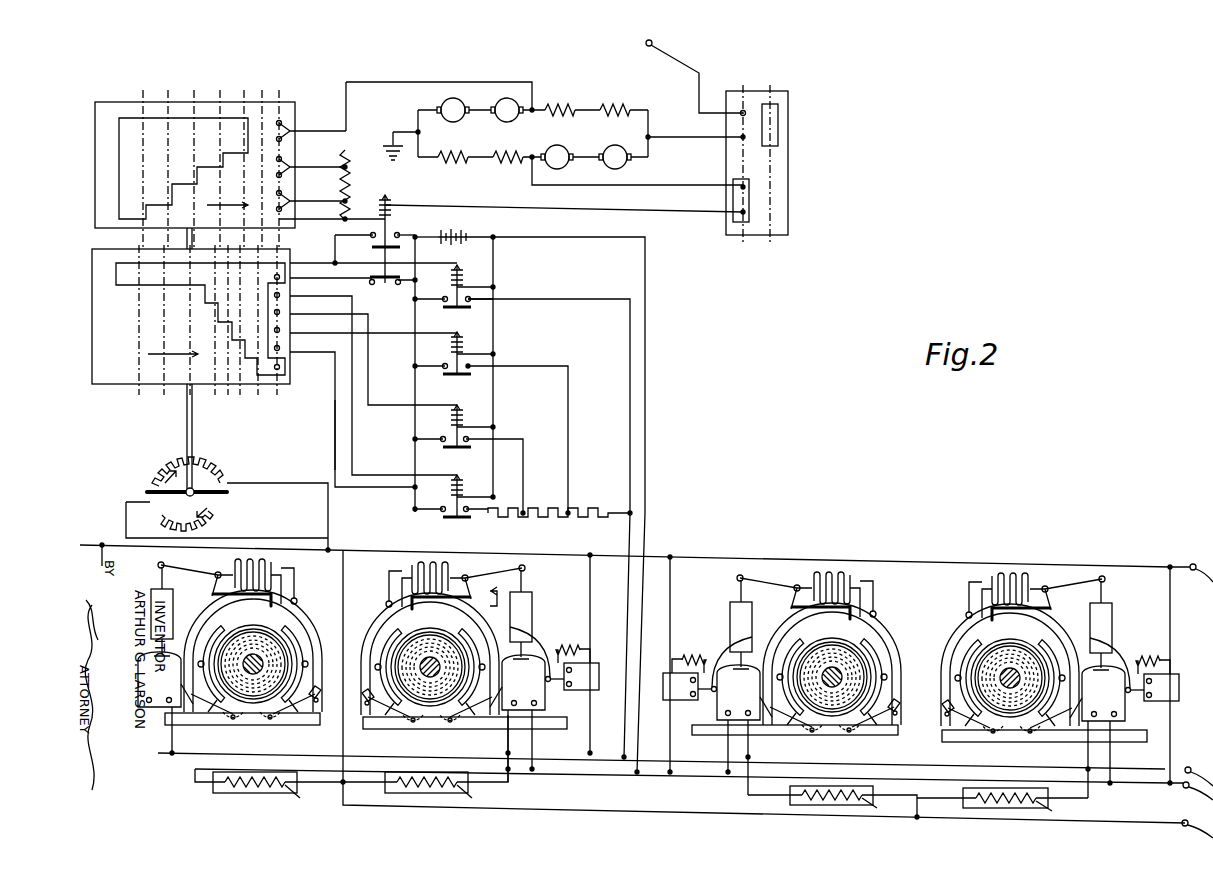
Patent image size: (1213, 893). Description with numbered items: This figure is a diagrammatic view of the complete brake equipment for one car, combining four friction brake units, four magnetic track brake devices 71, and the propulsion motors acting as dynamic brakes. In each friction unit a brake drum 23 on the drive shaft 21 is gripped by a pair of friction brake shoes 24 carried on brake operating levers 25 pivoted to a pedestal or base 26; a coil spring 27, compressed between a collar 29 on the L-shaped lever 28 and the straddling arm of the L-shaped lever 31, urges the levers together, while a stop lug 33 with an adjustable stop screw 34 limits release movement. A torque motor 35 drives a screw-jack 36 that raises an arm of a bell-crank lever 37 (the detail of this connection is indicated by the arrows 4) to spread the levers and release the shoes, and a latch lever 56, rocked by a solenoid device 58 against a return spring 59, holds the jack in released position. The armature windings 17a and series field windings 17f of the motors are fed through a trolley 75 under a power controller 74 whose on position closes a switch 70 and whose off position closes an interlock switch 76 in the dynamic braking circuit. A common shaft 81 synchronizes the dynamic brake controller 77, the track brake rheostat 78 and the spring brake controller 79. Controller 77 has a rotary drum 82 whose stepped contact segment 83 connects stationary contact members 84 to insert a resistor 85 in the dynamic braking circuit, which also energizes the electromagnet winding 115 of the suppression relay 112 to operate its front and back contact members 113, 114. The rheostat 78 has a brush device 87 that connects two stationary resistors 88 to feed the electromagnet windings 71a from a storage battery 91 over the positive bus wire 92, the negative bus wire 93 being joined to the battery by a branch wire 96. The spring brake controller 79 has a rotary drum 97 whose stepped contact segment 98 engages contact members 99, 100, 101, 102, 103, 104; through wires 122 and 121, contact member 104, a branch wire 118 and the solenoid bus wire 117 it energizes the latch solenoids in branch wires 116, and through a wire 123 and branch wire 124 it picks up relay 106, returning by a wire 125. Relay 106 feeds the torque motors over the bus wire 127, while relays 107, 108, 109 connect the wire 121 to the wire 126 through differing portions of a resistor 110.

The direction arrows 4 is at (498, 604).
The armature winding 17a is at (443, 101).
The series field winding 17f is at (560, 106).
The drive shaft 21 is at (264, 672).
The brake drum 23 is at (262, 724).
The friction brake shoes 24 is at (214, 648).
The brake operating levers 25 is at (190, 631).
The supporting pedestal or base 26 is at (208, 726).
The coil spring 27 is at (262, 563).
The L-shaped lever 28 is at (296, 587).
The collar 29 is at (236, 575).
The L-shaped lever 31 is at (240, 597).
The stop lug 33 is at (306, 724).
The adjustable stop screw 34 is at (314, 694).
The torque motor 35 is at (176, 712).
The screw-jack 36 is at (156, 600).
The bell-crank lever 37 is at (176, 569).
The latch lever 56 is at (540, 636).
The solenoid device 58 is at (589, 690).
The return spring 59 is at (578, 650).
The switch 70 is at (778, 120).
The magnetic track brake devices 71 is at (213, 797).
The electromagnet windings 71a is at (682, 804).
The power controller 74 is at (789, 149).
The trolley 75 is at (668, 62).
The interlock switch 76 is at (733, 183).
The dynamic brake controller 77 is at (99, 96).
The track brake rheostat 78 is at (156, 465).
The spring brake controller 79 is at (96, 245).
The common shaft 81 is at (187, 418).
The rotary drum 82 is at (96, 156).
The stepped contact segment 83 is at (125, 179).
The stationary contact members 84 is at (304, 211).
The resistor 85 is at (352, 177).
The rotary brush or contact device 87 is at (226, 494).
The stationary resistors 88 is at (214, 474).
The storage battery 91 is at (458, 231).
The positive bus wire 92 is at (326, 480).
The negative bus wire 93 is at (614, 775).
The branch wire 96 is at (645, 312).
The rotary drum 97 is at (100, 294).
The stepped contact segment 98 is at (128, 281).
The contact member 99 is at (277, 277).
The contact member 100 is at (277, 295).
The contact member 101 is at (277, 312).
The contact member 102 is at (277, 330).
The contact member 103 is at (277, 348).
The contact member 104 is at (277, 367).
The relay 106 is at (459, 268).
The relay 107 is at (459, 333).
The relay 108 is at (459, 406).
The relay 109 is at (459, 477).
The resistor 110 is at (520, 518).
The suppression relay 112 is at (388, 200).
The front contact member 113 is at (372, 246).
The back contact member 114 is at (372, 283).
The electromagnet winding 115 is at (378, 222).
The branch wire 116 is at (102, 560).
The solenoid bus wire 117 is at (345, 553).
The branch wire 118 is at (335, 416).
The wire 121 is at (415, 315).
The wire 122 is at (422, 238).
The wire 123 is at (335, 240).
The branch wire 124 is at (450, 265).
The wire 125 is at (494, 268).
The wire 126 is at (540, 300).
The bus wire 127 is at (272, 751).